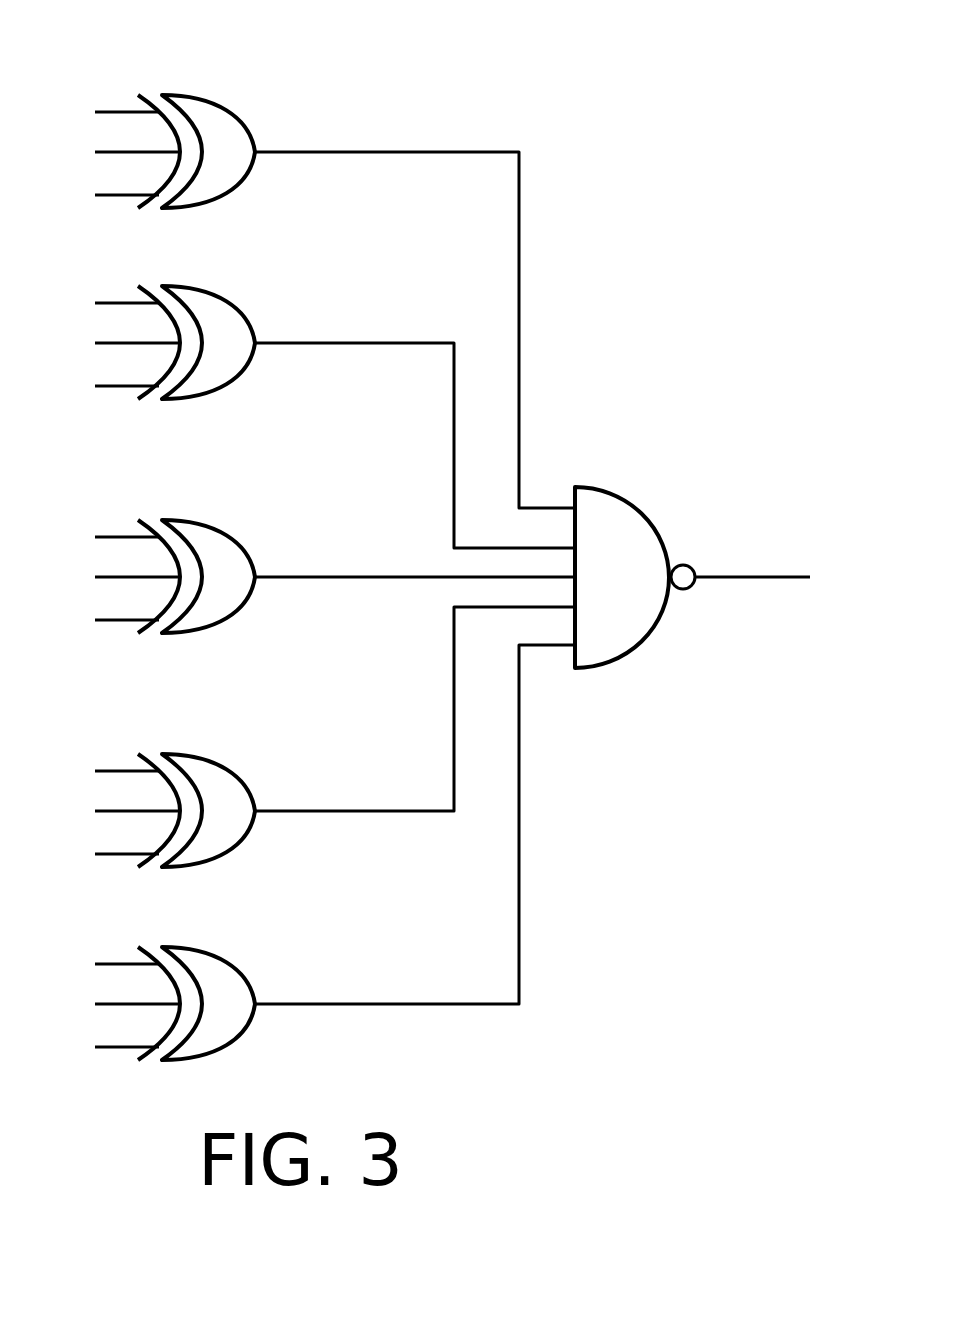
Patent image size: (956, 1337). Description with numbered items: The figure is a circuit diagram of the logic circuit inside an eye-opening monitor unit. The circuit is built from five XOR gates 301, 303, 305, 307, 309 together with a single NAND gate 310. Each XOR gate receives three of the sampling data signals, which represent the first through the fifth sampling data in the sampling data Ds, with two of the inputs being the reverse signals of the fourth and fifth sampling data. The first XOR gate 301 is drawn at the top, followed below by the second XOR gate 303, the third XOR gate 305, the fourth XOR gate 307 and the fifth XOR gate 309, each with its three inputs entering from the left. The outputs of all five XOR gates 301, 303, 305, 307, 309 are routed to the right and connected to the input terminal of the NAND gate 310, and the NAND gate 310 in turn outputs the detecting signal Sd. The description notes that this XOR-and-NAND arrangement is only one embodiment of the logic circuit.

The XOR gate 301 is at (237, 115).
The XOR gate 303 is at (237, 306).
The XOR gate 305 is at (237, 540).
The XOR gate 307 is at (237, 774).
The XOR gate 309 is at (237, 967).
The NAND gate 310 is at (637, 505).